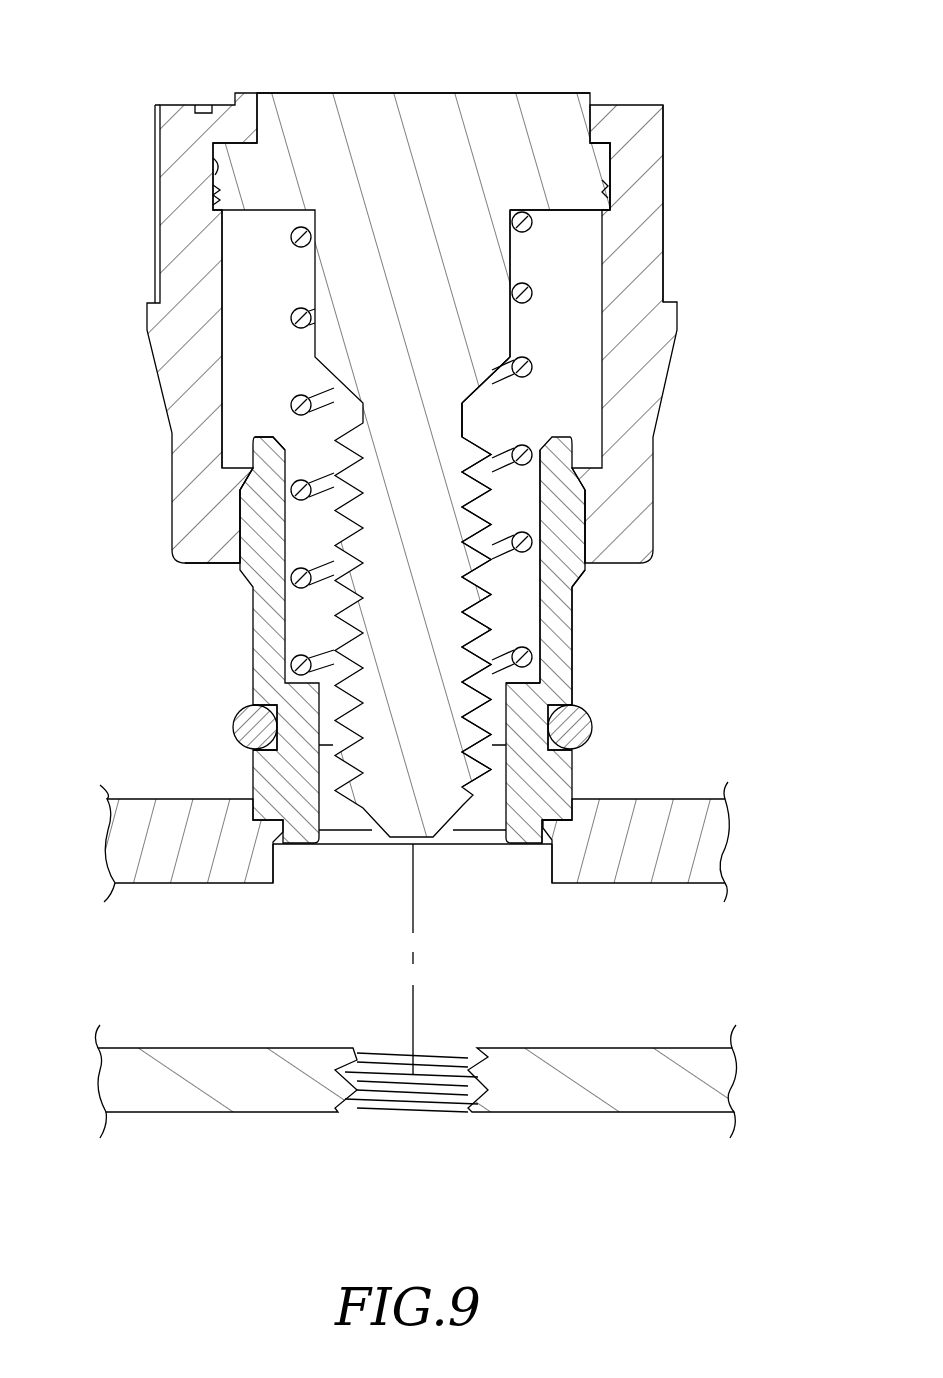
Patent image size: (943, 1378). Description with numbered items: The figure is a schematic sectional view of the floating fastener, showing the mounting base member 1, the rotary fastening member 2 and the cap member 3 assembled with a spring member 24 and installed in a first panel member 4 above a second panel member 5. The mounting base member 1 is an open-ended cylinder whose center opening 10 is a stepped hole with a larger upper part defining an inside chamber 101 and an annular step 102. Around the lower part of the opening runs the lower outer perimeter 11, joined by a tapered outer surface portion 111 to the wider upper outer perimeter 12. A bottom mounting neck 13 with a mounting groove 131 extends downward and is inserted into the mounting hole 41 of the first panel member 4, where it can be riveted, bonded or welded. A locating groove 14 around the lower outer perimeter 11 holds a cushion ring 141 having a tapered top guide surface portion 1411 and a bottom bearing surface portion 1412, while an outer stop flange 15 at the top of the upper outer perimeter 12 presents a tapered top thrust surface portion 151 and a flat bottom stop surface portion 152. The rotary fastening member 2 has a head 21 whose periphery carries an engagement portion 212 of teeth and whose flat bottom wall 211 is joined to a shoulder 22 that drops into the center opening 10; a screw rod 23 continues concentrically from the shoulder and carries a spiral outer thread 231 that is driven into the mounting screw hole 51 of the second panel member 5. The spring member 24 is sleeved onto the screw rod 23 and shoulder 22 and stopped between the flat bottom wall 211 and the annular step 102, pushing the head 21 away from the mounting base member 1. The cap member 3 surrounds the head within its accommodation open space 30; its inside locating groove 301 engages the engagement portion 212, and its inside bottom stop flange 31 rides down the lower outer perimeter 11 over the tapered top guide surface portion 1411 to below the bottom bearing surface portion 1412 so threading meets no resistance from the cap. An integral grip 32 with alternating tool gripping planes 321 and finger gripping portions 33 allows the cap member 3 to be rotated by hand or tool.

The mounting base member 1 is at (358, 683).
The center opening 10 is at (480, 815).
The inside chamber 101 is at (508, 620).
The annular step 102 is at (522, 660).
The lower outer perimeter 11 is at (562, 775).
The tapered outer surface portion 111 is at (572, 585).
The upper outer perimeter 12 is at (570, 538).
The bottom mounting neck 13 is at (525, 838).
The mounting groove 131 is at (550, 822).
The locating groove 14 is at (283, 707).
The cushion ring 141 is at (308, 728).
The tapered top guide surface portion 1411 is at (250, 712).
The bottom bearing surface portion 1412 is at (250, 750).
The outer stop flange 15 is at (85, 470).
The tapered top thrust surface portion 151 is at (233, 485).
The flat bottom stop surface portion 152 is at (230, 507).
The rotary fastening member 2 is at (474, 418).
The head 21 is at (403, 105).
The flat bottom wall 211 is at (550, 210).
The engagement portion 212 is at (600, 175).
The shoulder 22 is at (478, 320).
The screw rod 23 is at (490, 507).
The spiral outer thread 231 is at (533, 477).
The spring member 24 is at (497, 372).
The cap member 3 is at (164, 333).
The accommodation open space 30 is at (270, 272).
The inside locating groove 301 is at (218, 172).
The inside bottom stop flange 31 is at (207, 563).
The grip 32 is at (672, 285).
The tool gripping planes 321 is at (735, 85).
The finger gripping portions 33 is at (162, 195).
The first panel member 4 is at (414, 856).
The mounting hole 41 is at (273, 865).
The second panel member 5 is at (415, 1065).
The mounting screw hole 51 is at (377, 1067).